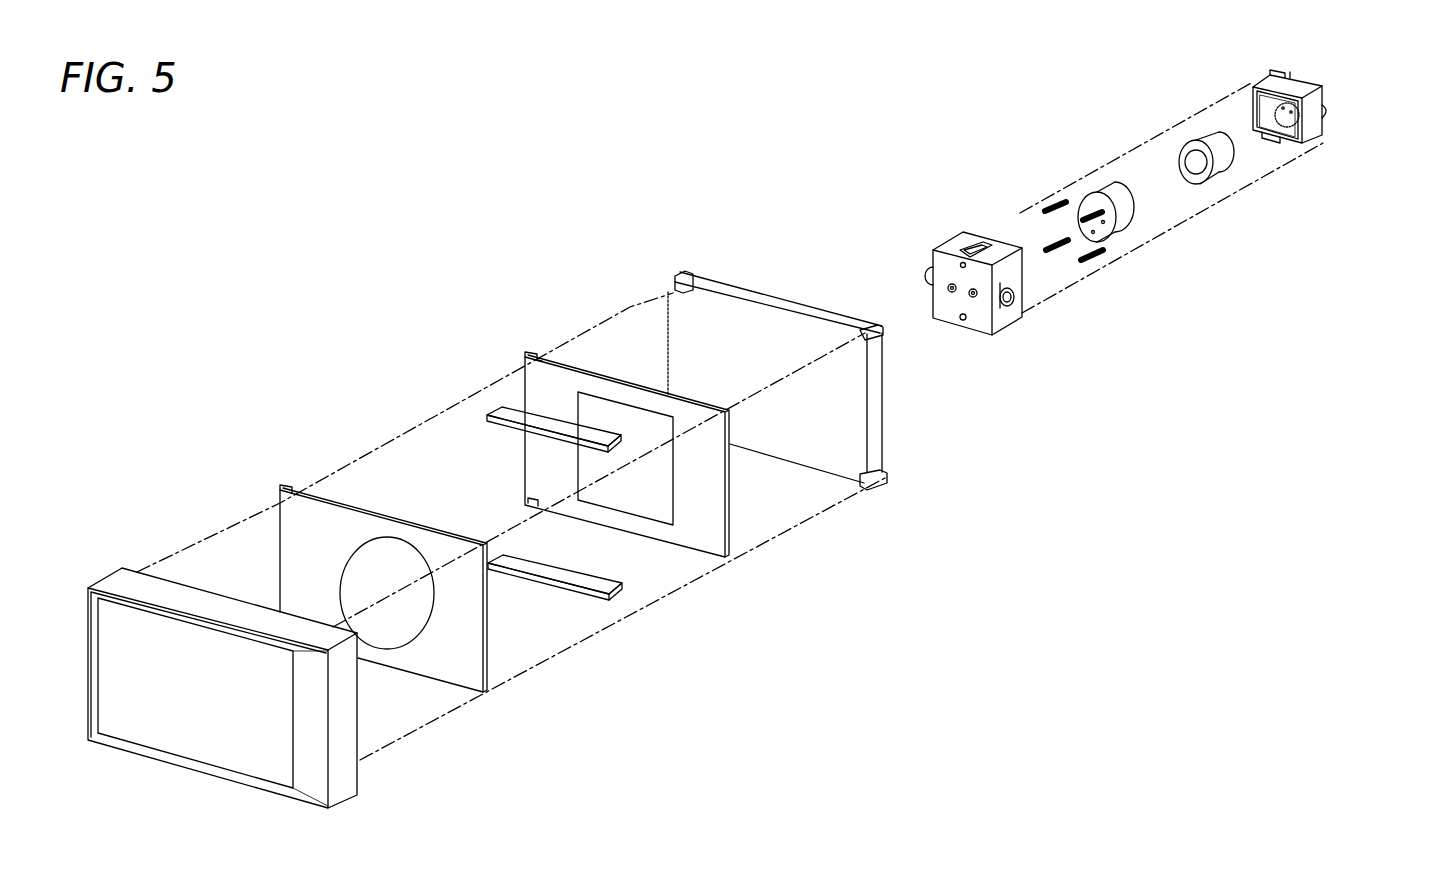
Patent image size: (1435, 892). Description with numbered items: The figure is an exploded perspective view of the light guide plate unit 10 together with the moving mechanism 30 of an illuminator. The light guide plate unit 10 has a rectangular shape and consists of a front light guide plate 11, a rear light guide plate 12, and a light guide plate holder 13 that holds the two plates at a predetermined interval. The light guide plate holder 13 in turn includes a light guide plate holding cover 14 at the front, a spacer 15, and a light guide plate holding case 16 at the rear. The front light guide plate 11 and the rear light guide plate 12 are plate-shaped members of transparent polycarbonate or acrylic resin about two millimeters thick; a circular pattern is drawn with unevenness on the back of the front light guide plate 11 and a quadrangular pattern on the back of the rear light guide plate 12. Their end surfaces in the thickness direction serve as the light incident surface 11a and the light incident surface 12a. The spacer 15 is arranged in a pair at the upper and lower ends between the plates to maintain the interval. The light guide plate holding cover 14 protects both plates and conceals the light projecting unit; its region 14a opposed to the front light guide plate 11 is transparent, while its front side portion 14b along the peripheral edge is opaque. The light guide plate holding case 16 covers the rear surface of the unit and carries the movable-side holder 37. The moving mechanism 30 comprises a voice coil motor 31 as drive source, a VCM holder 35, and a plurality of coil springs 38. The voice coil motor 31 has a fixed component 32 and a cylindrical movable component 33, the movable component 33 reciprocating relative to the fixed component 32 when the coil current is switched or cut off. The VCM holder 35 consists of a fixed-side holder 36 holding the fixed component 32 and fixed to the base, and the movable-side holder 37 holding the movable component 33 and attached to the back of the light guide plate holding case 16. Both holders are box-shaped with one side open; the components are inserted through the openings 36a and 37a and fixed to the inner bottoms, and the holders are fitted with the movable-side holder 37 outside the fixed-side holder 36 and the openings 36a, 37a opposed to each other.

The light guide plate unit 10 is at (712, 680).
The front light guide plate 11 is at (453, 667).
The light incident surface 11a is at (487, 618).
The rear light guide plate 12 is at (695, 538).
The light incident surface 12a is at (730, 480).
The light guide plate holder 13 is at (477, 308).
The light guide plate holding cover 14 is at (263, 618).
The region 14a is at (220, 750).
The front side portion 14b is at (313, 688).
The spacer 15 is at (500, 553).
The light guide plate holding case 16 is at (677, 293).
The moving mechanism 30 is at (1222, 333).
The voice coil motor 31 is at (1048, 103).
The fixed component 32 is at (1187, 153).
The movable component 33 is at (1110, 192).
The VCM holder 35 is at (1370, 221).
The fixed-side holder 36 is at (1308, 150).
The opening 36a is at (1253, 110).
The movable-side holder 37 is at (1023, 317).
The opening 37a is at (980, 236).
The coil springs 38 is at (1078, 208).